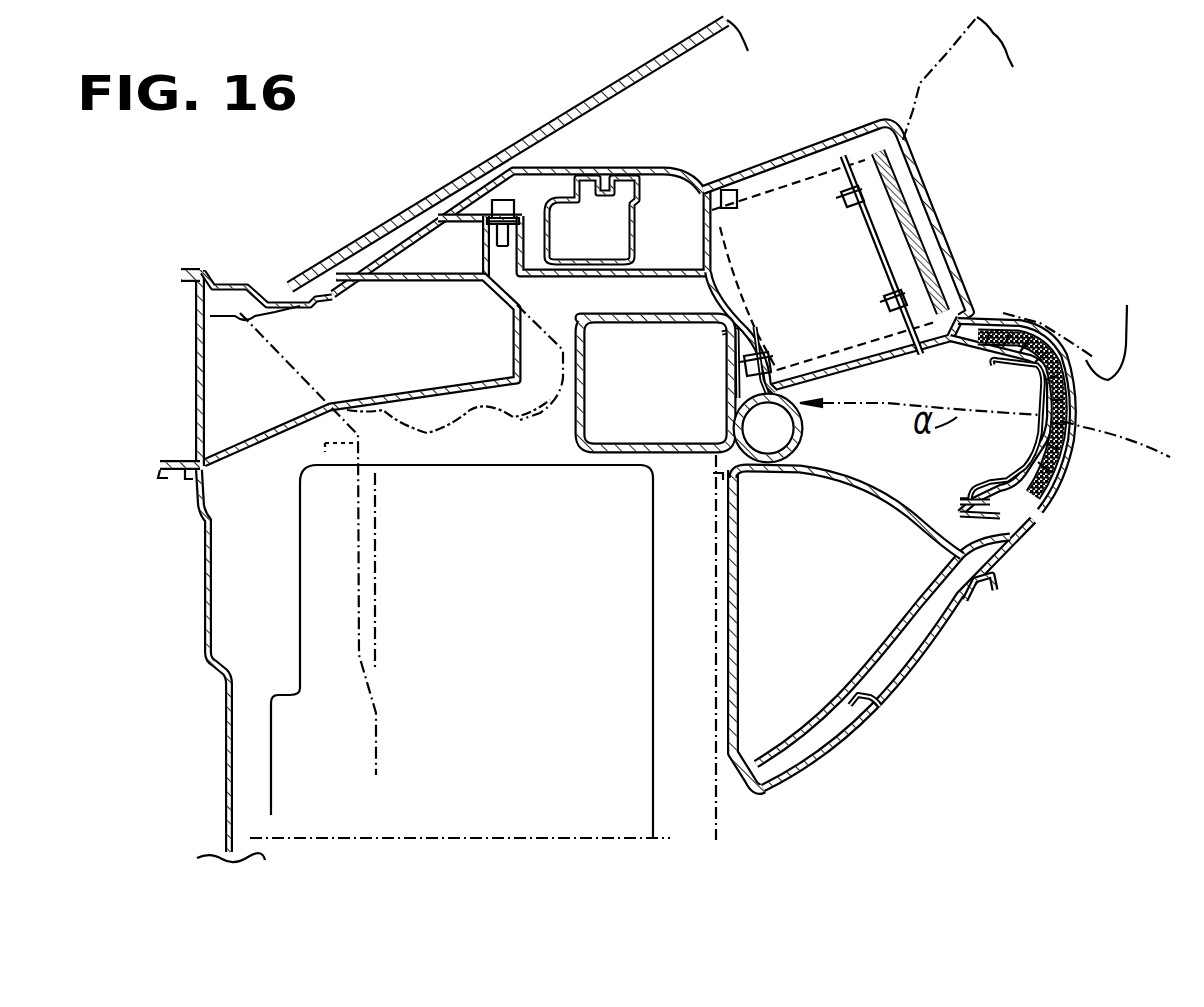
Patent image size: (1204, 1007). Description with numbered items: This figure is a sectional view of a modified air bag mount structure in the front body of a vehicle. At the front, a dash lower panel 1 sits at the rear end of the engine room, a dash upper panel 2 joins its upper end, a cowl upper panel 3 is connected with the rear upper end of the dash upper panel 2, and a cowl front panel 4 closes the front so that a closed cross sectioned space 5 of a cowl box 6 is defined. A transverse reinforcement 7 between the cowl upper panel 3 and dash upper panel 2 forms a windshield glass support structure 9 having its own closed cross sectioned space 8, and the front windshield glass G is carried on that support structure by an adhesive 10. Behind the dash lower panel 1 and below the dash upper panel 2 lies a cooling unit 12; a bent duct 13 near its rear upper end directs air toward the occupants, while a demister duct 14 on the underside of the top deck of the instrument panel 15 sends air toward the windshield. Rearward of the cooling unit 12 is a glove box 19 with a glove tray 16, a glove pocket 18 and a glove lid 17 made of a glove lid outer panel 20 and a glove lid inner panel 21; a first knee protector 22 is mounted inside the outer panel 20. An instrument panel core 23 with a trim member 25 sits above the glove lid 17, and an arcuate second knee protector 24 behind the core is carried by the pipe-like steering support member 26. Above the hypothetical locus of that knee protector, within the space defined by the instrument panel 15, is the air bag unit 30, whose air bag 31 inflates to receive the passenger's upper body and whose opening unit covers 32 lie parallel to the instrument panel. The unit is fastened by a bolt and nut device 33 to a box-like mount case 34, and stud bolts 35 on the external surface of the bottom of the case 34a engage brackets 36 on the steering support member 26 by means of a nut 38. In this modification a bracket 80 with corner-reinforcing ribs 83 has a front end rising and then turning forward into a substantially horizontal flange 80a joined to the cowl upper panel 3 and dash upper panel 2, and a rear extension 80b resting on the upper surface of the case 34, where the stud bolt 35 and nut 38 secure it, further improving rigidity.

The dash lower panel 1 is at (226, 770).
The dash upper panel 2 is at (268, 442).
The cowl upper panel 3 is at (230, 277).
The cowl front panel 4 is at (197, 325).
The closed cross sectioned space 5 is at (382, 359).
The cowl box 6 is at (192, 388).
The reinforcement 7 is at (423, 281).
The closed cross sectioned space 8 is at (460, 265).
The windshield glass support structure 9 is at (445, 197).
The adhesive 10 is at (343, 265).
The cooling unit 12 is at (506, 626).
The bent duct 13 is at (575, 437).
The demister duct 14 is at (637, 234).
The instrument panel 15 is at (782, 143).
The glove tray 16 is at (725, 559).
The glove lid 17 is at (940, 732).
The glove pocket 18 is at (818, 643).
The glove box 19 is at (713, 685).
The glove lid outer panel 20 is at (857, 727).
The glove lid inner panel 21 is at (827, 722).
The first knee protector 22 is at (947, 610).
The instrument panel core 23 is at (1037, 393).
The second knee protector 24 is at (983, 483).
The trim member 25 is at (1057, 503).
The steering support member 26 is at (803, 430).
The air bag unit 30 is at (930, 267).
The air bag 31 is at (920, 83).
The opening unit covers 32 is at (920, 185).
The bolt and nut device 33 is at (857, 210).
The mount case 34 is at (820, 173).
The bottom of the case 34a is at (720, 333).
The stud bolt 35 is at (821, 276).
The bracket 36 is at (720, 457).
The nut 38 is at (727, 190).
The bracket 80 is at (633, 281).
The horizontal flange 80a is at (523, 200).
The extension 80b is at (690, 262).
The rib 83 is at (517, 307).
The front windshield glass G is at (513, 142).